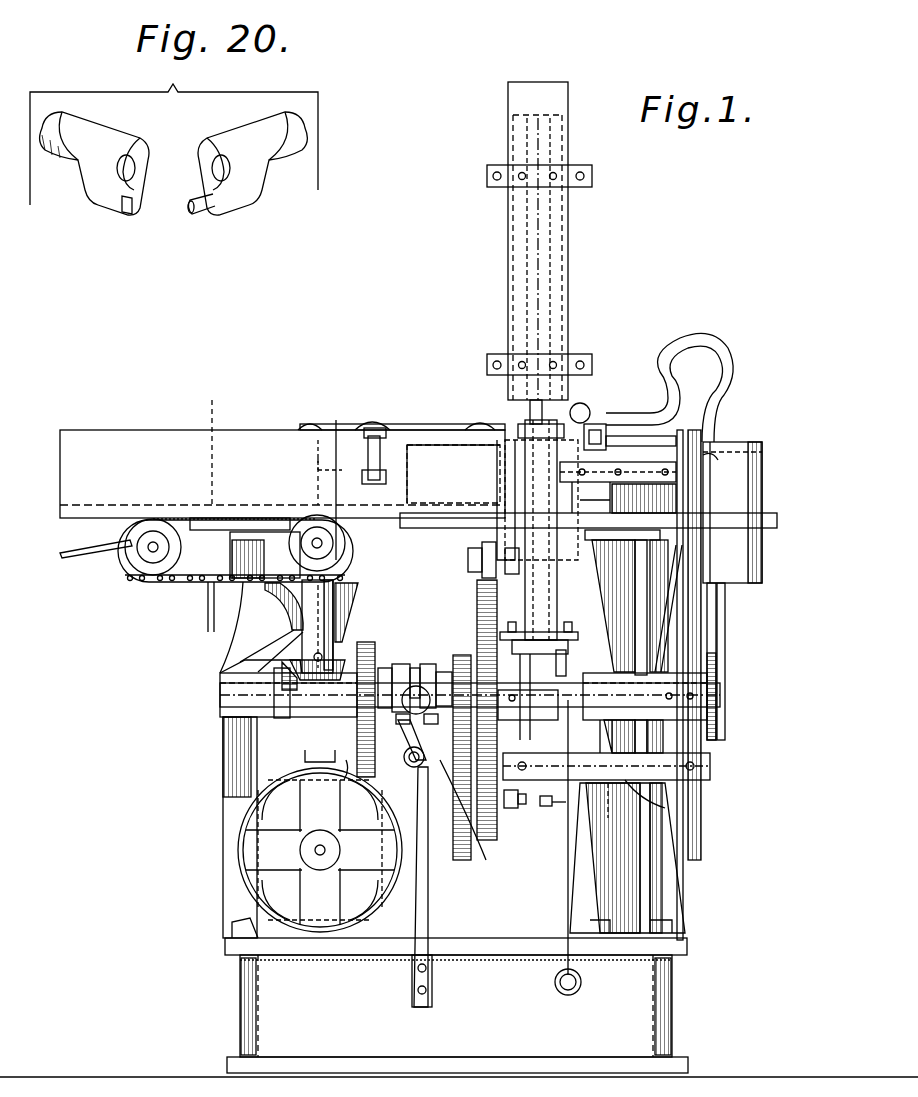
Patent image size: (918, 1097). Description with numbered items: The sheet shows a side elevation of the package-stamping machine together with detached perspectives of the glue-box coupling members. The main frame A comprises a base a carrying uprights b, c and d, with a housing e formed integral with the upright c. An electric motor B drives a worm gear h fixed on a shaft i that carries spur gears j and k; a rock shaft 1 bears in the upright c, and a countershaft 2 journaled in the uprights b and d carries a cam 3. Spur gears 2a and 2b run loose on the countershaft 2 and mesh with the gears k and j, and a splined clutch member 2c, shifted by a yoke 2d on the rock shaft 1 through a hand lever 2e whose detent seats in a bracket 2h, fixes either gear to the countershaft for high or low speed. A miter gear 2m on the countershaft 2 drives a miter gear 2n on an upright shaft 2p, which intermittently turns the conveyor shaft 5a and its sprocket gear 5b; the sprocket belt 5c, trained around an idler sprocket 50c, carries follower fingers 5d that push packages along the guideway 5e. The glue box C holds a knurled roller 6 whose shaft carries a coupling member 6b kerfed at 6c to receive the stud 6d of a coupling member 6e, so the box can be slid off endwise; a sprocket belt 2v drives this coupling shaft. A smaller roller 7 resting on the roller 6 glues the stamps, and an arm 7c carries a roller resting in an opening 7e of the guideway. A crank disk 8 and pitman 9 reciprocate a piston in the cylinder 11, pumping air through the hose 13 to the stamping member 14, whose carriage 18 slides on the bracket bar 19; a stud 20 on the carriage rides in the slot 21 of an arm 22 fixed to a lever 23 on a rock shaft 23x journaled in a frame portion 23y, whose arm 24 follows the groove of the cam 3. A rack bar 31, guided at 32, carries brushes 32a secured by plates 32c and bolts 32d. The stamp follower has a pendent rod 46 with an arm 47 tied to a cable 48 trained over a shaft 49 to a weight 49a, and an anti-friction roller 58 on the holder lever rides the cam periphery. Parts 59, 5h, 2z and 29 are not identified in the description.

In FIG. 20, the coupling member 6b is at (106, 138).
In FIG. 20, the kerf 6c is at (127, 214).
In FIG. 20, the coupling member 6e is at (262, 130).
In FIG. 20, the stud 6d is at (205, 212).
In FIG. 1, the reciprocatory rack bar 31 is at (548, 276).
In FIG. 1, the brushes 32a is at (566, 96).
In FIG. 1, the plate 32c is at (536, 176).
In FIG. 1, the bolts 32d is at (497, 170).
In FIG. 1, the guide 32 is at (508, 391).
In FIG. 1, the guideway 5e is at (144, 440).
In FIG. 1, the follower fingers 5d is at (180, 640).
In FIG. 1, the bar 59 is at (300, 427).
In FIG. 1, the bracket 5h is at (378, 426).
In FIG. 1, the arm 7c is at (368, 452).
In FIG. 1, the opening 7e is at (362, 480).
In FIG. 1, the glue box C is at (453, 474).
In FIG. 1, the slot 21 is at (366, 425).
In FIG. 1, the lever 23 is at (700, 560).
In FIG. 1, the cylinder 11 is at (740, 445).
In FIG. 1, the arm 22 is at (722, 436).
In FIG. 1, the hose or flexible conduit 13 is at (700, 342).
In FIG. 1, the stamping member 14 is at (585, 404).
In FIG. 1, the transverse bracket bar 19 is at (596, 428).
In FIG. 1, the stud 20 is at (630, 436).
In FIG. 1, the carriage 18 is at (606, 462).
In FIG. 1, the roller 6 is at (504, 462).
In FIG. 1, the anti-friction roller 58 is at (468, 556).
In FIG. 1, the roller 7 is at (546, 738).
In FIG. 1, the shaft 49 is at (568, 664).
In FIG. 1, the upright d is at (676, 862).
In FIG. 1, the bar 2z is at (712, 752).
In FIG. 1, the frame portion 23y is at (665, 808).
In FIG. 1, the rock shaft 23x is at (613, 814).
In FIG. 1, the sprocket belt 2v is at (680, 630).
In FIG. 1, the crank disk 8 is at (720, 660).
In FIG. 1, the pitman 9 is at (730, 690).
In FIG. 1, the countershaft 2 is at (330, 708).
In FIG. 1, the miter gear 2m is at (300, 716).
In FIG. 1, the upright shaft 2p is at (300, 640).
In FIG. 1, the miter gear 2n is at (348, 666).
In FIG. 1, the spur gear 2b is at (370, 642).
In FIG. 1, the clutch member 2c is at (406, 666).
In FIG. 1, the yoke 2d is at (418, 664).
In FIG. 1, the bracket 2h is at (440, 672).
In FIG. 1, the spur gear 2a is at (460, 648).
In FIG. 1, the cam 3 is at (472, 822).
In FIG. 1, the link 29 is at (408, 730).
In FIG. 1, the hand lever 2e is at (426, 757).
In FIG. 1, the pendent rod 46 is at (540, 720).
In FIG. 1, the enlargement or arm 47 is at (552, 806).
In FIG. 1, the arm 24 is at (510, 810).
In FIG. 1, the spur gear k is at (488, 862).
In FIG. 1, the rock shaft 1 is at (440, 840).
In FIG. 1, the spur gear j is at (347, 762).
In FIG. 1, the electric motor B is at (240, 842).
In FIG. 1, the worm gear h is at (300, 773).
In FIG. 1, the shaft i is at (296, 798).
In FIG. 1, the upright b is at (222, 892).
In FIG. 1, the housing e is at (236, 924).
In FIG. 1, the upright c is at (448, 880).
In FIG. 1, the cable 48 is at (566, 906).
In FIG. 1, the base a is at (240, 1030).
In FIG. 1, the main frame A is at (459, 1028).
In FIG. 1, the weight 49a is at (582, 990).
In FIG. 1, the conveyor shaft 5a is at (314, 540).
In FIG. 1, the idler sprocket 50c is at (140, 568).
In FIG. 1, the sprocket gear 5b is at (284, 550).
In FIG. 1, the sprocket belt 5c is at (186, 584).